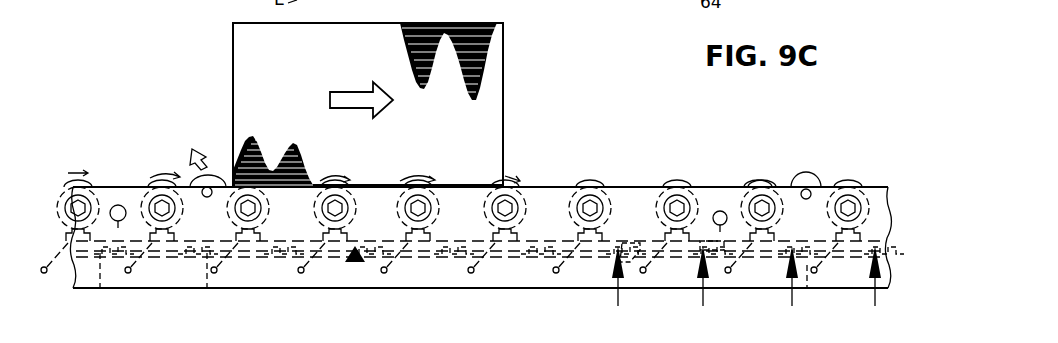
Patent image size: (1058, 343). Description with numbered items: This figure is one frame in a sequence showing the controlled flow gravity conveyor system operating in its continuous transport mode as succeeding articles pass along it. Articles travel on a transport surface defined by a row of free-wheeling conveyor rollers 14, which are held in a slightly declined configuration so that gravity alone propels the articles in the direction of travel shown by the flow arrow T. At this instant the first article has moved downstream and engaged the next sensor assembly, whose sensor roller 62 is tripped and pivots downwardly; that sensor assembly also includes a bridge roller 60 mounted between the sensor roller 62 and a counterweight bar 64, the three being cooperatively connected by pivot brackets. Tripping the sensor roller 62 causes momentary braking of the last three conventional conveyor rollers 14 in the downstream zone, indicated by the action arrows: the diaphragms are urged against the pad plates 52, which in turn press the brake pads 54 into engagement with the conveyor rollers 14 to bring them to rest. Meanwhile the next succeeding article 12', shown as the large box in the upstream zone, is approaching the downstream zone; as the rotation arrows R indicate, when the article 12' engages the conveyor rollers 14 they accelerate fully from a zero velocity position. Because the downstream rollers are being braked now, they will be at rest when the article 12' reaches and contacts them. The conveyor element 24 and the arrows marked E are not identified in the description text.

The next succeeding article 12' is at (399, 104).
The conveyor rollers 14 is at (588, 185).
The conveyor element 24 is at (357, 264).
The pad plates 52 is at (628, 195).
The brake pads 54 is at (852, 186).
The bridge roller 60 is at (758, 186).
The sensor roller 62 is at (807, 180).
The counterweight bar 64 is at (711, 196).
The electrode arrows E is at (618, 296).
The rotation arrows R is at (258, 183).
The flow arrow T is at (359, 88).